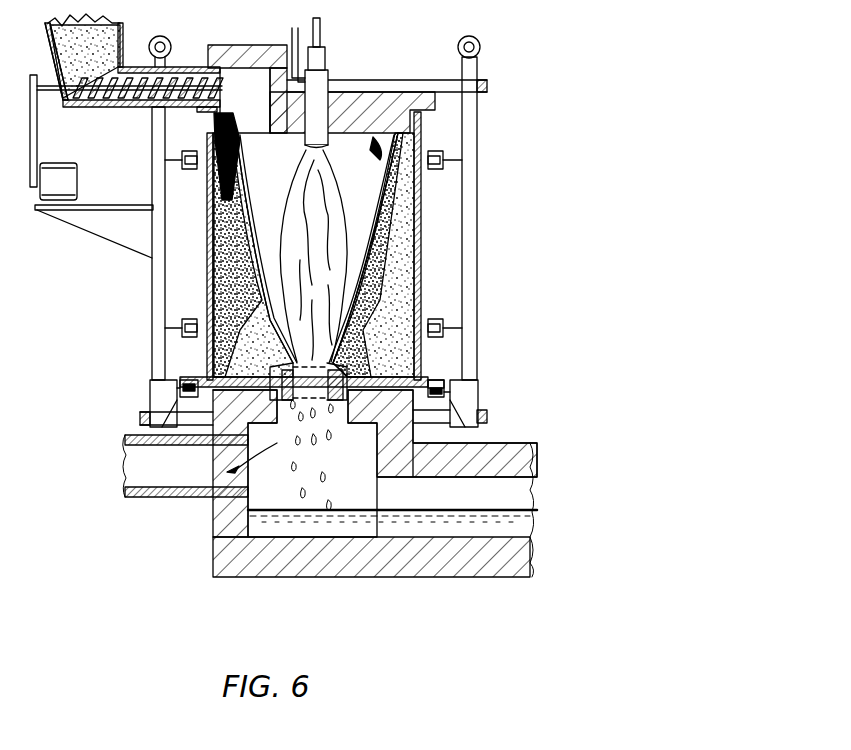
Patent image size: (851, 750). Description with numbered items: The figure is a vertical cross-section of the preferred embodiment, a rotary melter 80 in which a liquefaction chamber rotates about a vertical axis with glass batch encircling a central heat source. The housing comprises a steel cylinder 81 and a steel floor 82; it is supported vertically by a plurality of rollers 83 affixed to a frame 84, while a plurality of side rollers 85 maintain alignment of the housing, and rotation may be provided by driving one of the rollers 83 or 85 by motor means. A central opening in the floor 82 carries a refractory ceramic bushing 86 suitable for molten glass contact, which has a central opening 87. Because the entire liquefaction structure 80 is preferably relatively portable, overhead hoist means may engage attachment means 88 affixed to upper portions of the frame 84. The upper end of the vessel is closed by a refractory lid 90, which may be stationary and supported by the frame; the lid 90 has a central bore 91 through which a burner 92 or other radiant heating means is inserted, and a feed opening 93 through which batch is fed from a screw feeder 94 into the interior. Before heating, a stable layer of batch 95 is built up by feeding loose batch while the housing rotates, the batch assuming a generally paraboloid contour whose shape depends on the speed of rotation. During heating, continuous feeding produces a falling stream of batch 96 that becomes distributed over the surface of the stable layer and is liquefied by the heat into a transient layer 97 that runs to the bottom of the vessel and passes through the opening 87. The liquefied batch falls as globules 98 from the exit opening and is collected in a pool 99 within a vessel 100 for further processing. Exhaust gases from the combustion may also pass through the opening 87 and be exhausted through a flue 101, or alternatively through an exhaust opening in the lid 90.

The rotary melter 80 is at (497, 172).
The steel cylinder 81 is at (422, 190).
The steel floor 82 is at (434, 380).
The rollers 83 is at (190, 380).
The frame 84 is at (478, 278).
The side rollers 85 is at (191, 170).
The refractory ceramic bushing 86 is at (345, 352).
The central opening 87 is at (299, 370).
The attachment means 88 is at (480, 42).
The refractory lid 90 is at (393, 92).
The central bore 91 is at (330, 108).
The burner 92 is at (327, 52).
The feed opening 93 is at (254, 106).
The screw feeder 94 is at (90, 105).
The stable layer of batch 95 is at (397, 222).
The falling stream of batch 96 is at (380, 197).
The transient layer 97 is at (357, 298).
The globules 98 is at (318, 443).
The pool 99 is at (388, 510).
The vessel 100 is at (392, 576).
The flue 101 is at (162, 497).